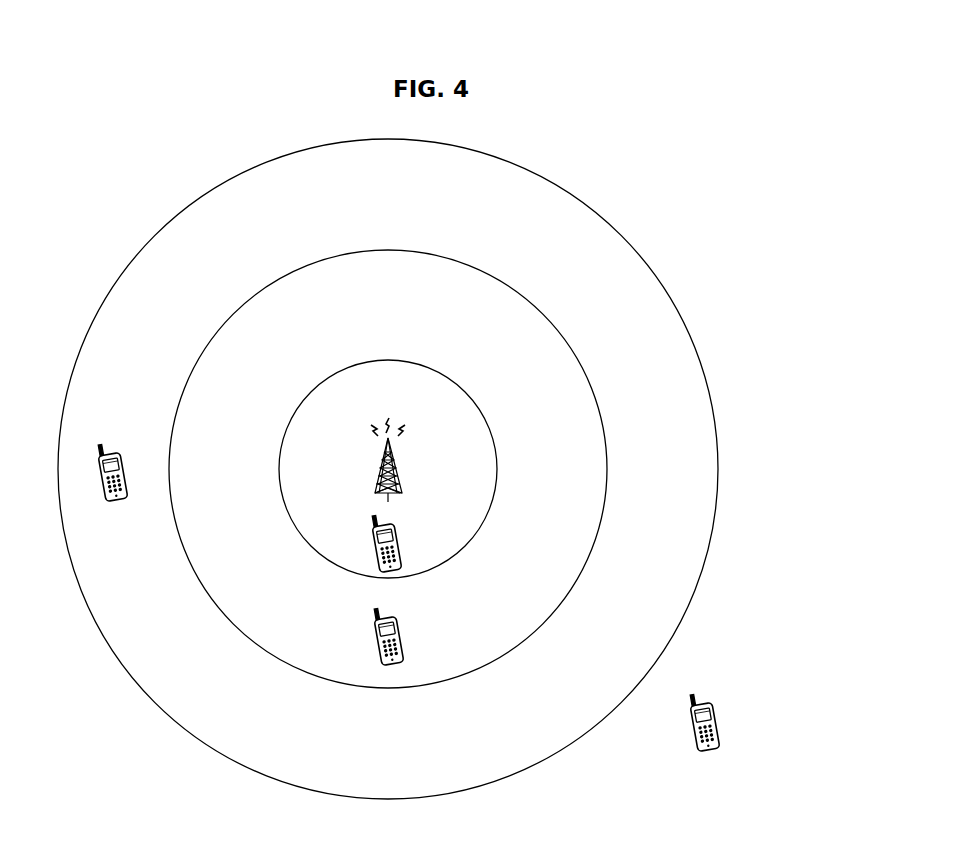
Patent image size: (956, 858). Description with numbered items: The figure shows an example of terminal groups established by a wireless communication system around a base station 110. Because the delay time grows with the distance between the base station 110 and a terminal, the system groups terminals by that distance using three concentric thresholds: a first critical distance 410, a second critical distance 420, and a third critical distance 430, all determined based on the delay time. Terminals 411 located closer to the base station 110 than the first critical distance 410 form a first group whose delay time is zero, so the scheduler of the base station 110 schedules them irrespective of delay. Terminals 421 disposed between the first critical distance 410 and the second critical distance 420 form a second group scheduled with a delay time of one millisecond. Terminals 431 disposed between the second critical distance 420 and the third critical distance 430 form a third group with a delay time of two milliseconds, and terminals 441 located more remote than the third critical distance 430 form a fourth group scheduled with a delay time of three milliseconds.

The base station 110 is at (386, 464).
The first critical distance 410 is at (497, 463).
The second critical distance 420 is at (607, 463).
The third critical distance 430 is at (718, 463).
The terminals of first group 411 is at (384, 521).
The terminals of second group 421 is at (390, 612).
The terminals of third group 431 is at (112, 452).
The terminals of fourth group 441 is at (700, 702).